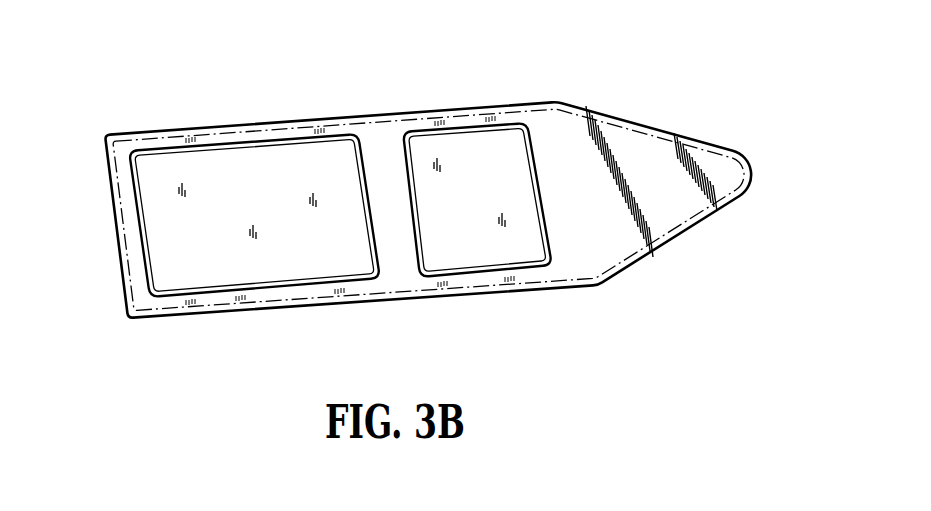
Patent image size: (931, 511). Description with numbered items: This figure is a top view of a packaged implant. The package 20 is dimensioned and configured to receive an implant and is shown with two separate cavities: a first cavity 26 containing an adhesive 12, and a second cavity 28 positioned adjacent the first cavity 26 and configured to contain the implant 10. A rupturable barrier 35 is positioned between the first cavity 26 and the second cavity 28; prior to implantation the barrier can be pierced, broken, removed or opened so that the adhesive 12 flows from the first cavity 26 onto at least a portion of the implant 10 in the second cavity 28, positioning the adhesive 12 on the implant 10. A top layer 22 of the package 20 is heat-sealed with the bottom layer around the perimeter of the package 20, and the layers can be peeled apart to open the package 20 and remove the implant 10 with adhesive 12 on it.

The package 20 is at (103, 162).
The top layer 22 is at (717, 170).
The first cavity 26 is at (513, 116).
The second cavity 28 is at (237, 146).
The rupturable barrier 35 is at (392, 197).
The implant 10 is at (272, 273).
The adhesive 12 is at (470, 260).